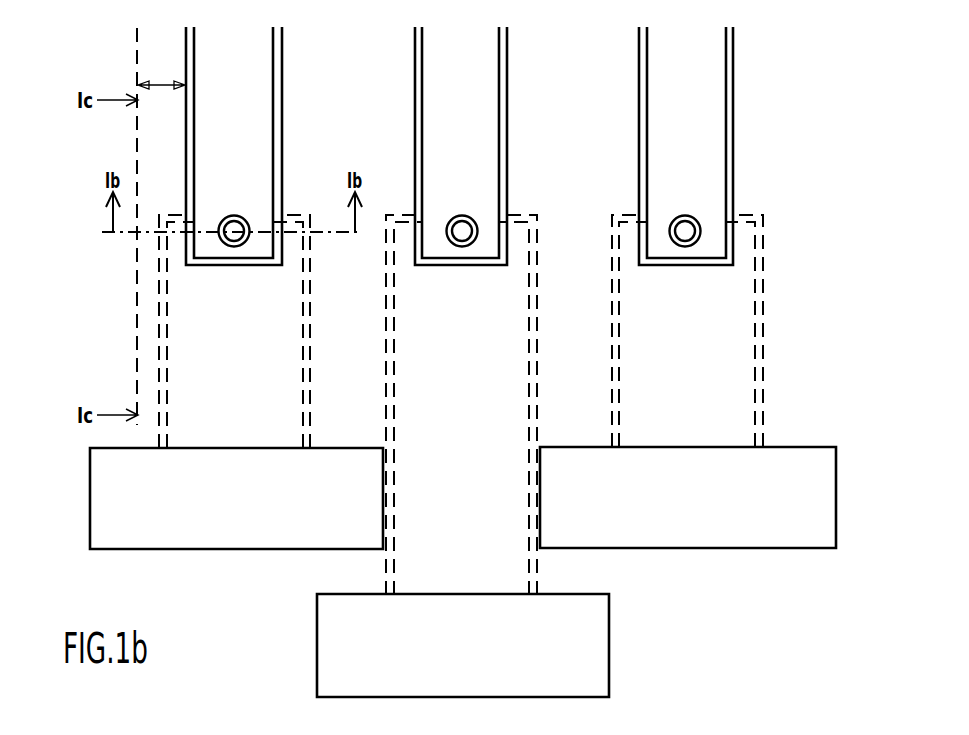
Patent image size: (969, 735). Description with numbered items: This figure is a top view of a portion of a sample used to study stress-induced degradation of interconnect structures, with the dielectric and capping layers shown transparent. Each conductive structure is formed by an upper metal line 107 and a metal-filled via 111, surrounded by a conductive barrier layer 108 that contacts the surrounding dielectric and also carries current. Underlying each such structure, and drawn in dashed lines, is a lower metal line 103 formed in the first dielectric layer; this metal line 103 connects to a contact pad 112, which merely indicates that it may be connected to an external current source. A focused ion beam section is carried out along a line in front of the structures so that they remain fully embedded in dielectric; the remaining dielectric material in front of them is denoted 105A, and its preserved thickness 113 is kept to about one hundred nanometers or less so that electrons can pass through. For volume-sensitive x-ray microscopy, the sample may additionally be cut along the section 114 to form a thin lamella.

The metal line 103 is at (249, 382).
The remaining layer of dielectric material 105A is at (152, 47).
The metal line 107 is at (249, 122).
The barrier layer 108 is at (283, 98).
The metal-filled via 111 is at (242, 217).
The contact pad 112 is at (232, 522).
The thickness 113 is at (161, 72).
The section 114 is at (311, 318).